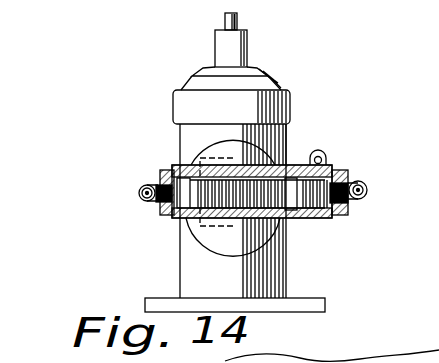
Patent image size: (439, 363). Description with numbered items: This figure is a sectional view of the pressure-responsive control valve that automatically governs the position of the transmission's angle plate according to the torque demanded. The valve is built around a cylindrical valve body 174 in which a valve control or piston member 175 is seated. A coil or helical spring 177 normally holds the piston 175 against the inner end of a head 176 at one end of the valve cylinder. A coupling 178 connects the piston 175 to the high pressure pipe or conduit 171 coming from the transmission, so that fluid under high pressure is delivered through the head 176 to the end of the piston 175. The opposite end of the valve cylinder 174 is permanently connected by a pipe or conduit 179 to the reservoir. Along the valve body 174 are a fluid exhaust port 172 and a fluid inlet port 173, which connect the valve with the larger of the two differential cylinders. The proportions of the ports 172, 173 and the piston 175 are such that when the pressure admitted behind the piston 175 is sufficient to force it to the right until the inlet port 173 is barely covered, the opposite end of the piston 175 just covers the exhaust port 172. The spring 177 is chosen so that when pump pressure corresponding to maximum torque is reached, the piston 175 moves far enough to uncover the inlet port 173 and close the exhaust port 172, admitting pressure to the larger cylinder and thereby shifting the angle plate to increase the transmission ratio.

The conduit 171 is at (143, 184).
The fluid exhaust port 172 is at (290, 158).
The fluid inlet port 173 is at (176, 164).
The cylindrical valve body 174 is at (286, 140).
The valve control or piston member 175 is at (180, 218).
The head 176 is at (162, 168).
The coil or helical spring 177 is at (284, 218).
The coupling 178 is at (139, 194).
The pipe or conduit 179 is at (362, 180).